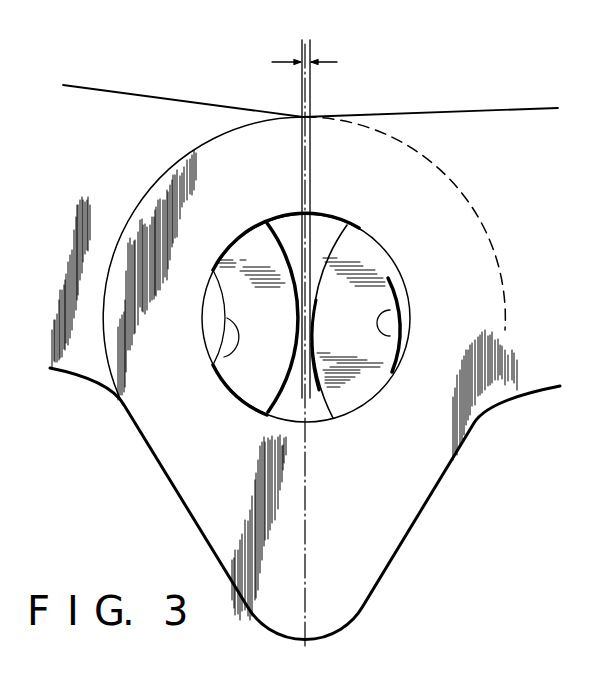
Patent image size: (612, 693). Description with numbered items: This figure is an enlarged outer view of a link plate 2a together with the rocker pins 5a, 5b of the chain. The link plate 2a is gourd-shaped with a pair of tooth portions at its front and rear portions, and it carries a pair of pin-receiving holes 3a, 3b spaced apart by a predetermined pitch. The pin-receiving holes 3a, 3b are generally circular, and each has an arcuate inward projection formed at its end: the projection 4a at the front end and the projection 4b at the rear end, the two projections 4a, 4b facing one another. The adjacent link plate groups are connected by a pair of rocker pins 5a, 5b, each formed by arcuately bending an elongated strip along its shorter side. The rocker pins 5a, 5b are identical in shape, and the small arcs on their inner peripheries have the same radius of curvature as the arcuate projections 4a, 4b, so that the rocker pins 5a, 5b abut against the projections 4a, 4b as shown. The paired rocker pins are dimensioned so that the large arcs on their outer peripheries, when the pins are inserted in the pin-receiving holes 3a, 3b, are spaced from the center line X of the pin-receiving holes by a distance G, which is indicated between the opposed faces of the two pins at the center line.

The link plate 2a is at (100, 110).
The front pin-receiving hole 3a is at (297, 235).
The rear pin-receiving hole 3b is at (262, 210).
The arcuate inward projection 4a is at (226, 364).
The arcuate inward projection 4b is at (386, 331).
The rocker pin 5a is at (248, 373).
The rocker pin 5b is at (363, 378).
The distance G is at (304, 62).
The center line X is at (299, 345).